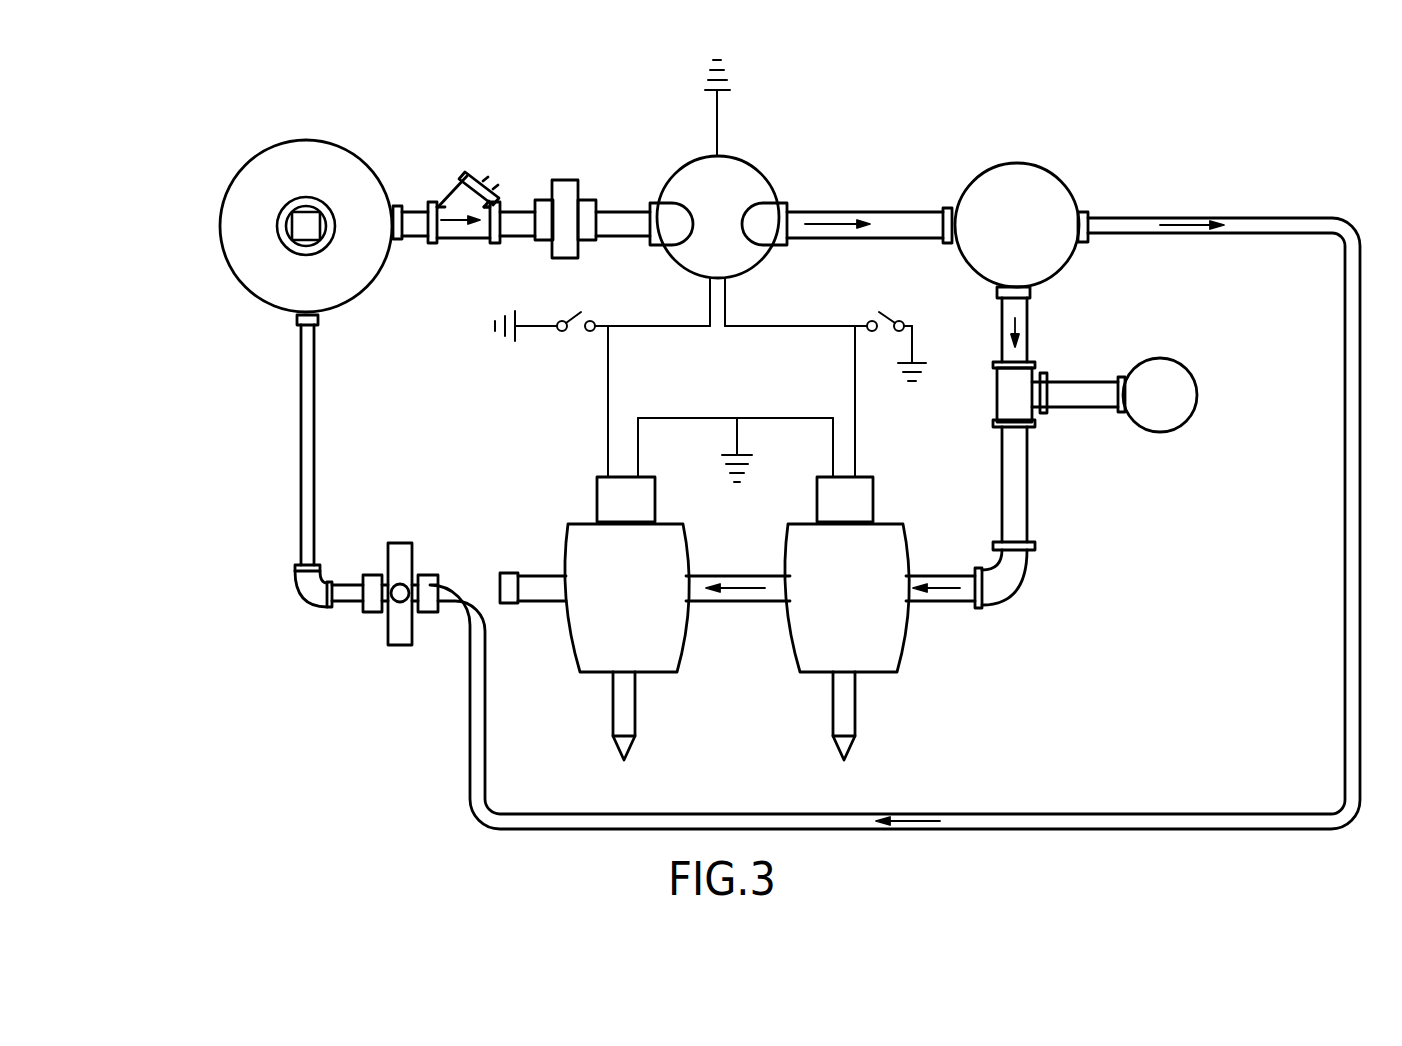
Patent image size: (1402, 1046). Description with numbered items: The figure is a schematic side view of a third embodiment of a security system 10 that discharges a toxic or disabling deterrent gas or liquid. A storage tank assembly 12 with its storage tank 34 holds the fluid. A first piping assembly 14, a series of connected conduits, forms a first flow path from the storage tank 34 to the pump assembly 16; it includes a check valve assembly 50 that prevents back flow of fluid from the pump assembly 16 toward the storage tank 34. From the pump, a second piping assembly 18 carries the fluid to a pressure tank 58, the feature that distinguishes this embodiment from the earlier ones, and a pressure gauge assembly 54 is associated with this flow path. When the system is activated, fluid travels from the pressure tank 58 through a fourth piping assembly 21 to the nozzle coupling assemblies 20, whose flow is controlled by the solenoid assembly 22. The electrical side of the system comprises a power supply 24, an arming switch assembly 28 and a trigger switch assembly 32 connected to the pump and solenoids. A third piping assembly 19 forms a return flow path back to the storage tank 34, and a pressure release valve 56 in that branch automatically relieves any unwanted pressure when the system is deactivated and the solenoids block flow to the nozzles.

The security system 10 is at (288, 468).
The storage tank assembly 12 is at (220, 195).
The first piping assembly 14 is at (513, 218).
The pump assembly 16 is at (684, 173).
The second piping assembly 18 is at (899, 217).
The third piping assembly 19 is at (1353, 728).
The nozzle coupling assembly 20 is at (624, 740).
The fourth piping assembly 21 is at (1017, 503).
The solenoid assembly 22 is at (574, 550).
The power supply 24 is at (740, 63).
The arming switch assembly 28 is at (576, 318).
The trigger switch assembly 32 is at (877, 314).
The storage tank 34 is at (318, 296).
The check valve assembly 50 is at (452, 232).
The pressure gauge assembly 54 is at (1186, 432).
The pressure release valve 56 is at (400, 548).
The pressure tank 58 is at (1032, 243).